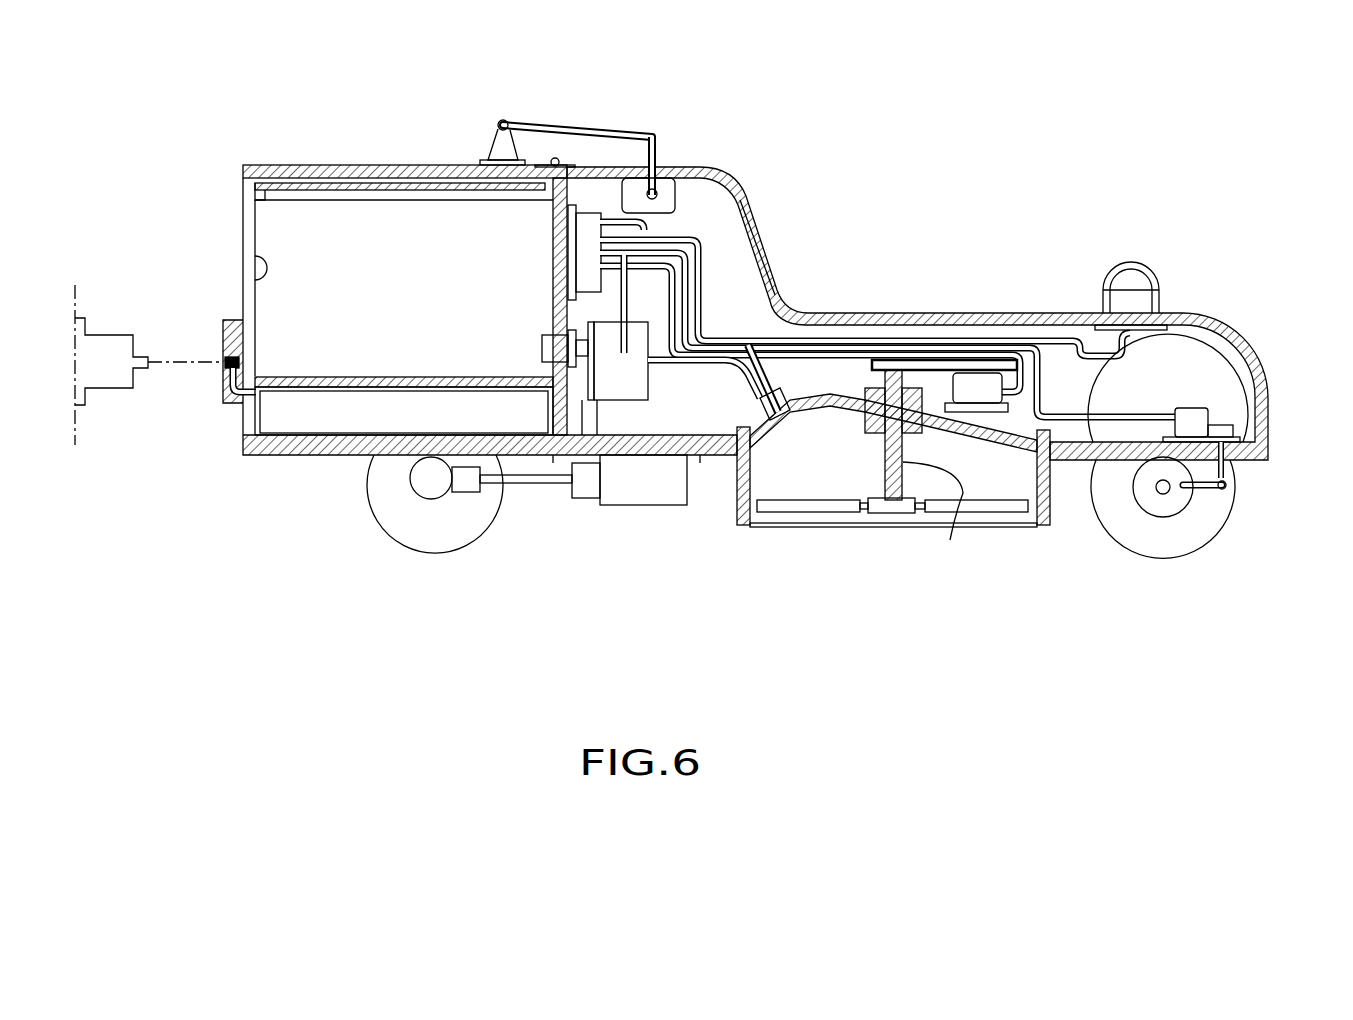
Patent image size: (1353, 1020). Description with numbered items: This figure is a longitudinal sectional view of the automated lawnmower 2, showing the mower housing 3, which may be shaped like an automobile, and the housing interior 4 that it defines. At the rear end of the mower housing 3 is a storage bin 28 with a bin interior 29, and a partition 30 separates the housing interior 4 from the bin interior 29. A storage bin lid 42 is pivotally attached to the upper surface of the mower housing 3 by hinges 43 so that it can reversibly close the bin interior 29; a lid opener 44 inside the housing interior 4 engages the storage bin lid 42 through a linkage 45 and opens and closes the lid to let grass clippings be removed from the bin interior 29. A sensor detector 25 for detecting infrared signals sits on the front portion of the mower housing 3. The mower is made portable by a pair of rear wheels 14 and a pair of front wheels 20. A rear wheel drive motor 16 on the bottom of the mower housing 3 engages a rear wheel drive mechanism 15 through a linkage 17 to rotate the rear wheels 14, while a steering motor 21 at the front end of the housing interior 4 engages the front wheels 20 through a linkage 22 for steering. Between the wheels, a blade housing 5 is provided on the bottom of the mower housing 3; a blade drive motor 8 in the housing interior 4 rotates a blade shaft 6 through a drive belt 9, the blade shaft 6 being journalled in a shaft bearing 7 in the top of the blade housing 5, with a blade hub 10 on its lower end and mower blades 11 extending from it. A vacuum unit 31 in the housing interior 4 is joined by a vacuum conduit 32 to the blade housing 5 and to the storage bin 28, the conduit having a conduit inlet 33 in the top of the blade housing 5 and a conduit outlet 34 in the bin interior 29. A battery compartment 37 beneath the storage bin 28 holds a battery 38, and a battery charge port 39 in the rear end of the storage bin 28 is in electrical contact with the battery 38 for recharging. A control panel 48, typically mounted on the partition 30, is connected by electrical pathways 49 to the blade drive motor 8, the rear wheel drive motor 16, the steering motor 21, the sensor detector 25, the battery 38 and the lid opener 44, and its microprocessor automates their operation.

The automated lawnmower 2 is at (948, 45).
The mower housing 3 is at (748, 200).
The housing interior 4 is at (736, 178).
The blade housing 5 is at (1050, 520).
The blade shaft 6 is at (933, 525).
The shaft bearing 7 is at (872, 400).
The blade drive motor 8 is at (1010, 380).
The drive belt 9 is at (893, 363).
The blade hub 10 is at (893, 513).
The mower blades 11 is at (825, 512).
The rear wheels 14 is at (420, 548).
The rear wheel drive mechanism 15 is at (400, 500).
The rear wheel drive motor 16 is at (618, 507).
The linkage 17 is at (510, 495).
The front wheels 20 is at (1188, 555).
The steering motor 21 is at (1270, 415).
The linkage 22 is at (1232, 485).
The sensor detector 25 is at (1130, 262).
The storage bin 28 is at (243, 232).
The bin interior 29 is at (252, 278).
The partition 30 is at (555, 272).
The vacuum unit 31 is at (566, 306).
The vacuum conduit 32 is at (560, 457).
The conduit inlet 33 is at (785, 430).
The conduit outlet 34 is at (560, 330).
The battery compartment 37 is at (305, 440).
The battery 38 is at (352, 418).
The battery charge port 39 is at (225, 363).
The storage bin lid 42 is at (270, 165).
The hinges 43 is at (557, 158).
The lid opener 44 is at (632, 195).
The linkage 45 is at (527, 125).
The control panel 48 is at (583, 237).
The electrical pathways 49 is at (640, 310).